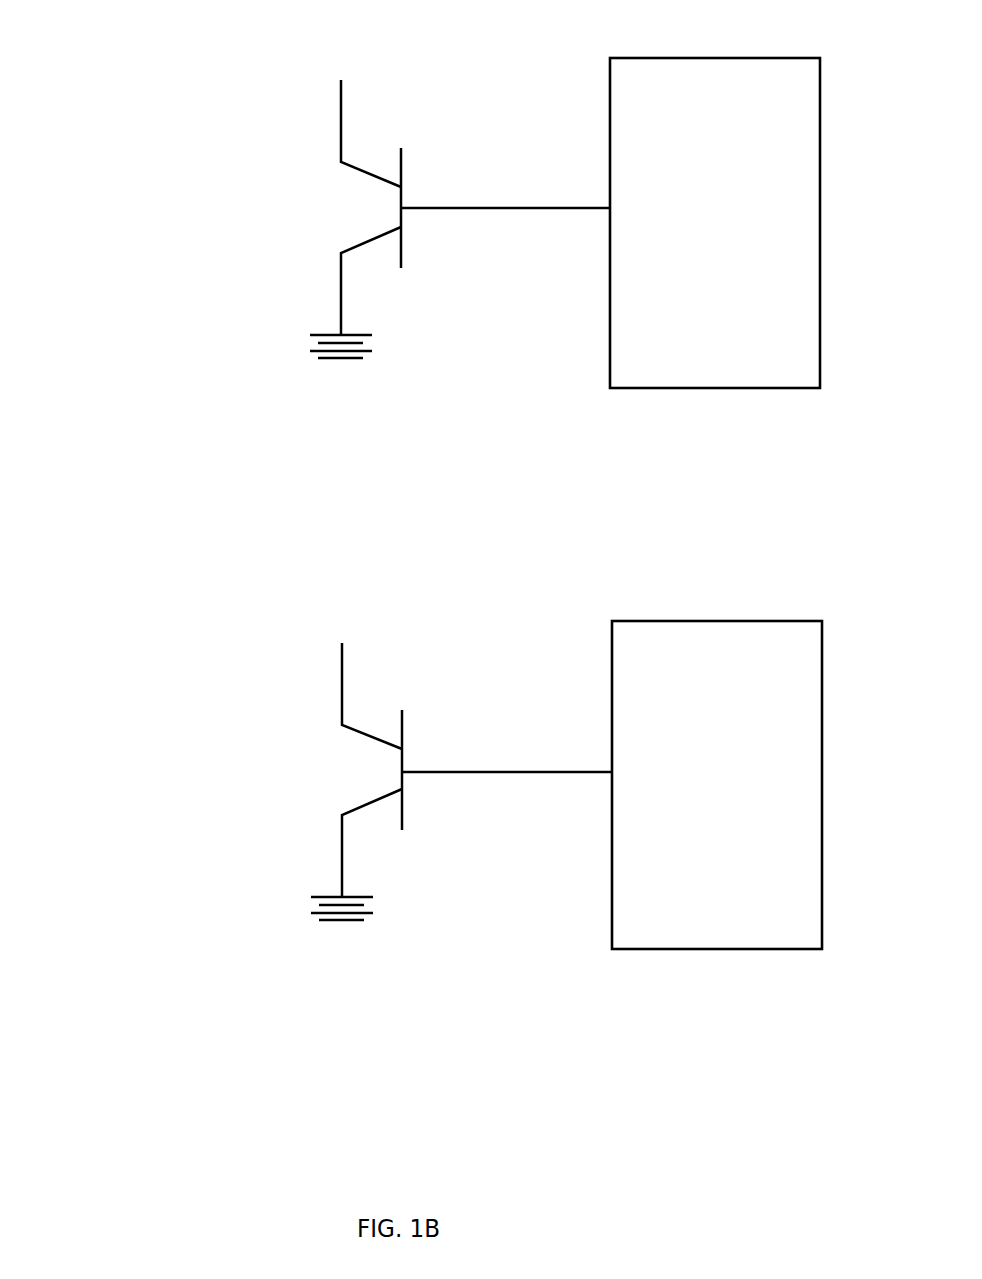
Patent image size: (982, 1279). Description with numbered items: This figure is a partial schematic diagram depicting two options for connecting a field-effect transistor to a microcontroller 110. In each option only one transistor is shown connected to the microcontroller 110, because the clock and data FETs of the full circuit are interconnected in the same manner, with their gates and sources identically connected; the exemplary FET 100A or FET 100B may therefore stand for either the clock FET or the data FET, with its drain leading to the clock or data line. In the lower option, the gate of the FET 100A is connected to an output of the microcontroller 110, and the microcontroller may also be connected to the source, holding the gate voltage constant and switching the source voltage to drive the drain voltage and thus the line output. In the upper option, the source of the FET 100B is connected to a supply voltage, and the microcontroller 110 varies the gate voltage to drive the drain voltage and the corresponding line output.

The FET 100A is at (262, 865).
The FET 100B is at (267, 75).
The microcontroller 110 is at (716, 503).